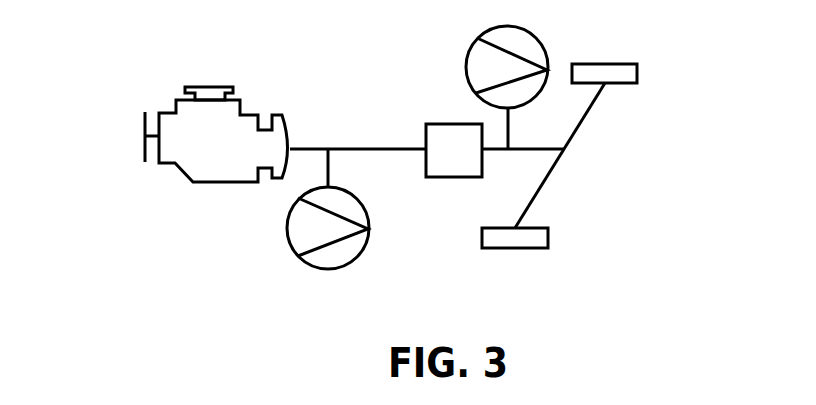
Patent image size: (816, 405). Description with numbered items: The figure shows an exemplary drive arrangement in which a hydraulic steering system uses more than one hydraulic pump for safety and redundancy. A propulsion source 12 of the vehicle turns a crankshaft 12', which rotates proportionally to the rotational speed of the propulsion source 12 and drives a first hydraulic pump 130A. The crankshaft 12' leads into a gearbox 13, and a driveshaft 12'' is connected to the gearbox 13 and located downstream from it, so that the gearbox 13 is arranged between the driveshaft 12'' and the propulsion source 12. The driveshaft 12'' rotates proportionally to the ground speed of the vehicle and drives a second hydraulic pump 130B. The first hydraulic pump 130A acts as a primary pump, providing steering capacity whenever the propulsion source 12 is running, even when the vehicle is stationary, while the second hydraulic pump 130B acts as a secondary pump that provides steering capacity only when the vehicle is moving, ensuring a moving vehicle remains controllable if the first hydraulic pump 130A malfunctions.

The propulsion source 12 is at (183, 110).
The crankshaft 12' is at (358, 93).
The driveshaft 12'' is at (554, 156).
The gearbox 13 is at (454, 150).
The first hydraulic pump 130A is at (287, 237).
The second hydraulic pump 130B is at (465, 63).